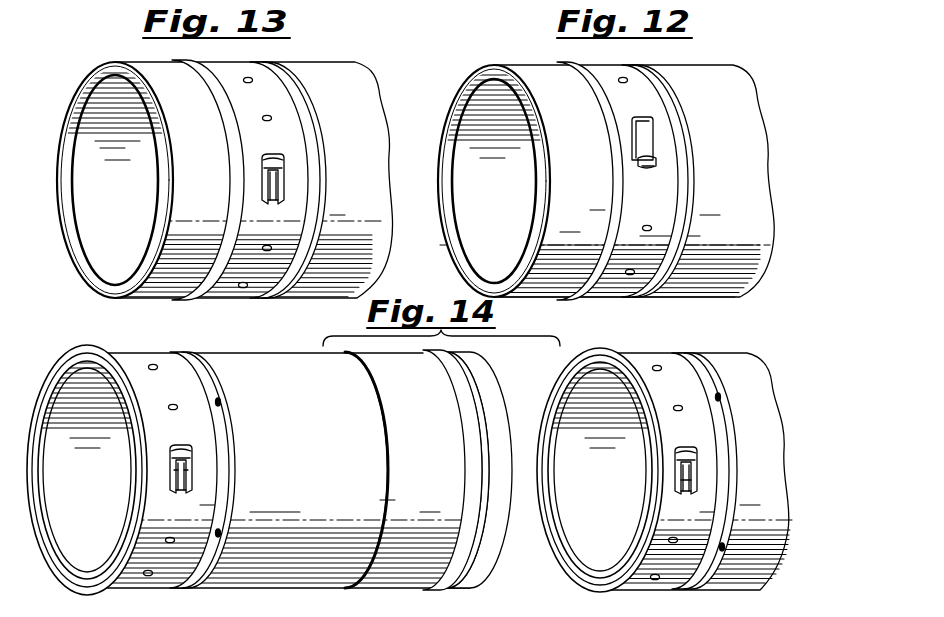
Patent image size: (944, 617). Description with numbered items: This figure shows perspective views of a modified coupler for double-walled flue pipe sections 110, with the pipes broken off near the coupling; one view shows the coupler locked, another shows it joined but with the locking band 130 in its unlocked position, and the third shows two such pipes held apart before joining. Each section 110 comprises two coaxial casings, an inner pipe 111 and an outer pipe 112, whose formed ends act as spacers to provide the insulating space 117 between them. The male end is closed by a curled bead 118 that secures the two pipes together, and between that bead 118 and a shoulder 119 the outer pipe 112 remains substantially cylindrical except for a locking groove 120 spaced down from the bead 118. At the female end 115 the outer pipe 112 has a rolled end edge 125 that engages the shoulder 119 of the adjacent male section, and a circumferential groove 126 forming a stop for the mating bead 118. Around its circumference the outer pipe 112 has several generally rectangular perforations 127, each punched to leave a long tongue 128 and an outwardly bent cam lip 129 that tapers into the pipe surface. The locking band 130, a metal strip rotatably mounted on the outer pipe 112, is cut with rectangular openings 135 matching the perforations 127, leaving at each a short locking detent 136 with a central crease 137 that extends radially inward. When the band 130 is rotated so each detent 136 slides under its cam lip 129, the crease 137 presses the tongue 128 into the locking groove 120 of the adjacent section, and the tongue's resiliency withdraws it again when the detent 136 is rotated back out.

In FIG. 13, the double-walled flue pipe section 110 is at (372, 124).
In FIG. 12, the double-walled flue pipe section 110 is at (460, 90).
In FIG. 14, the double-walled flue pipe section 110 is at (356, 432).
In FIG. 13, the inner pipe 111 is at (78, 214).
In FIG. 12, the inner pipe 111 is at (490, 183).
In FIG. 14, the inner pipe 111 is at (86, 496).
In FIG. 13, the outer pipe 112 is at (73, 100).
In FIG. 12, the outer pipe 112 is at (448, 240).
In FIG. 14, the outer pipe 112 is at (356, 356).
In FIG. 14, the female end 115 is at (60, 571).
In FIG. 13, the insulating space 117 is at (68, 137).
In FIG. 12, the insulating space 117 is at (446, 163).
In FIG. 14, the curled bead 118 is at (508, 408).
In FIG. 14, the shoulder 119 is at (427, 358).
In FIG. 14, the locking groove 120 is at (468, 400).
In FIG. 13, the rolled end edge 125 is at (241, 143).
In FIG. 12, the rolled end edge 125 is at (617, 153).
In FIG. 14, the rolled end edge 125 is at (134, 398).
In FIG. 13, the circumferential groove 126 is at (322, 198).
In FIG. 12, the circumferential groove 126 is at (698, 204).
In FIG. 14, the circumferential groove 126 is at (232, 455).
In FIG. 13, the perforation 127 is at (285, 166).
In FIG. 14, the perforation 127 is at (196, 470).
In FIG. 13, the tongue 128 is at (284, 188).
In FIG. 14, the tongue 128 is at (196, 486).
In FIG. 13, the cam lip 129 is at (283, 150).
In FIG. 12, the cam lip 129 is at (672, 162).
In FIG. 14, the cam lip 129 is at (182, 446).
In FIG. 13, the locking band 130 is at (275, 92).
In FIG. 12, the locking band 130 is at (648, 93).
In FIG. 14, the locking band 130 is at (180, 375).
In FIG. 12, the rectangular opening 135 is at (658, 137).
In FIG. 14, the rectangular opening 135 is at (174, 484).
In FIG. 13, the locking detent 136 is at (276, 206).
In FIG. 12, the locking detent 136 is at (647, 172).
In FIG. 14, the locking detent 136 is at (670, 518).
In FIG. 14, the central crease 137 is at (177, 489).